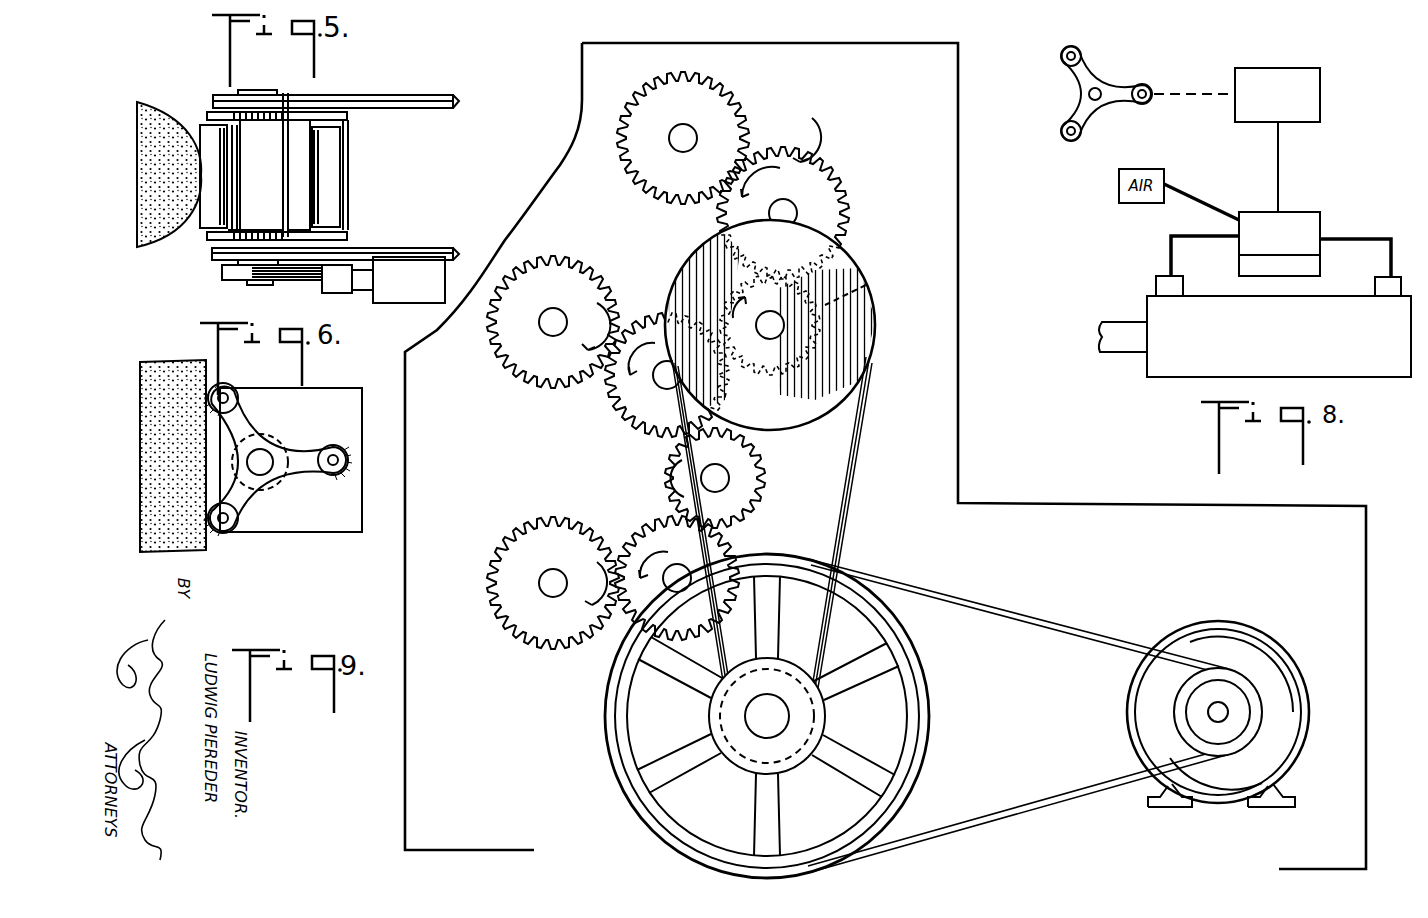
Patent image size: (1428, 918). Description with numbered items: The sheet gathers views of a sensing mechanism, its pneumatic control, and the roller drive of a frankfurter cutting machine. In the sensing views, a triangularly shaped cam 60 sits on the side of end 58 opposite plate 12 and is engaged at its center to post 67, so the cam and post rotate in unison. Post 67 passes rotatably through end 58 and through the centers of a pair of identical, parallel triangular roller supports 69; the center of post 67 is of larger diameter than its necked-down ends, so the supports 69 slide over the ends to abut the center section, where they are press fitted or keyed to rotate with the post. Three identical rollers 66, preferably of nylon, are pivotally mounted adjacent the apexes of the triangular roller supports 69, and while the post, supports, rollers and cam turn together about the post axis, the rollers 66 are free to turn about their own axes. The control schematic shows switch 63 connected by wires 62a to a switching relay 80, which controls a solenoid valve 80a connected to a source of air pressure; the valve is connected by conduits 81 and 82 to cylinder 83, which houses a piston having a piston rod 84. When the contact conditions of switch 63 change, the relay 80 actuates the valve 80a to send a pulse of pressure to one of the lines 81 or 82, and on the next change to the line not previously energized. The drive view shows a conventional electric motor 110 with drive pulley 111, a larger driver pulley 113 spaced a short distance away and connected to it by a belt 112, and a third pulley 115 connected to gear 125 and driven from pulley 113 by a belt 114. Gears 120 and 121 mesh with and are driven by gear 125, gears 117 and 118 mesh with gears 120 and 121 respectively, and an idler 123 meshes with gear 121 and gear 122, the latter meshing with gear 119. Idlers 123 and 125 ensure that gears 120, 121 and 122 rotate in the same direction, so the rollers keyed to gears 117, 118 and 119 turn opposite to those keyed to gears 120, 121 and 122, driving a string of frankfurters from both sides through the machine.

In FIG. 5, the plate 12 is at (407, 107).
In FIG. 5, the end 58 is at (427, 250).
In FIG. 5, the triangularly shaped cam 60 is at (305, 278).
In FIG. 5, the rollers 66 is at (347, 180).
In FIG. 6, the rollers 66 is at (235, 390).
In FIG. 5, the post 67 is at (290, 117).
In FIG. 5, the triangular roller supports 69 is at (348, 113).
In FIG. 6, the triangular roller supports 69 is at (280, 438).
In FIG. 8, the triangular roller supports 69 is at (1092, 82).
In FIG. 8, the switch 63 is at (1316, 80).
In FIG. 8, the wires 62a is at (1278, 156).
In FIG. 8, the switching relay 80 is at (1320, 224).
In FIG. 8, the solenoid valve 80a is at (1321, 264).
In FIG. 8, the conduit 81 is at (1385, 270).
In FIG. 8, the conduit 82 is at (1166, 246).
In FIG. 8, the cylinder 83 is at (1163, 371).
In FIG. 8, the piston rod 84 is at (1128, 343).
In FIG. 9, the electric motor 110 is at (1242, 648).
In FIG. 9, the drive pulley 111 is at (1182, 702).
In FIG. 9, the belt 112 is at (1022, 618).
In FIG. 9, the driver pulley 113 is at (917, 657).
In FIG. 9, the belt 114 is at (845, 502).
In FIG. 9, the third pulley 115 is at (857, 338).
In FIG. 9, the gear 117 is at (720, 113).
In FIG. 9, the gear 118 is at (542, 387).
In FIG. 9, the gear 119 is at (502, 623).
In FIG. 9, the gear 120 is at (842, 185).
In FIG. 9, the gear 121 is at (610, 412).
In FIG. 9, the gear 122 is at (728, 543).
In FIG. 9, the idler 123 is at (665, 467).
In FIG. 9, the gear 125 is at (866, 285).